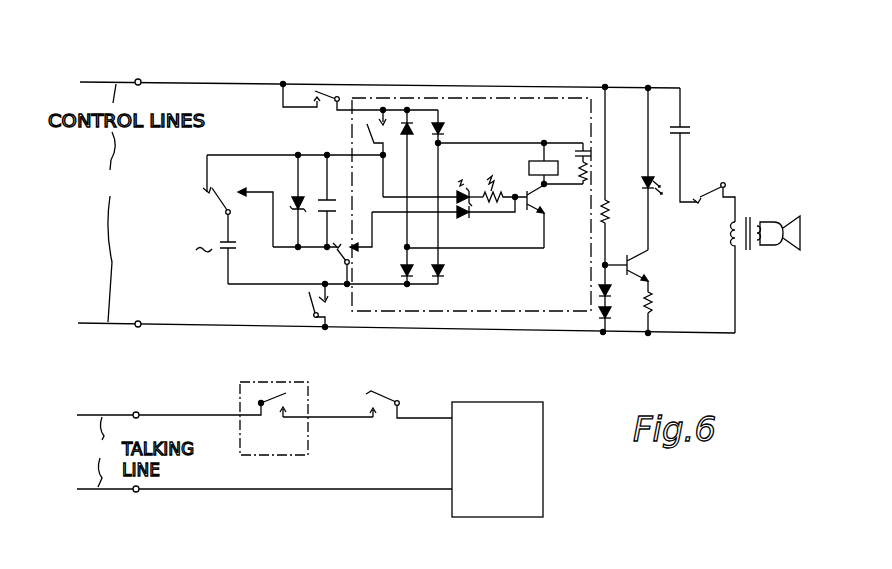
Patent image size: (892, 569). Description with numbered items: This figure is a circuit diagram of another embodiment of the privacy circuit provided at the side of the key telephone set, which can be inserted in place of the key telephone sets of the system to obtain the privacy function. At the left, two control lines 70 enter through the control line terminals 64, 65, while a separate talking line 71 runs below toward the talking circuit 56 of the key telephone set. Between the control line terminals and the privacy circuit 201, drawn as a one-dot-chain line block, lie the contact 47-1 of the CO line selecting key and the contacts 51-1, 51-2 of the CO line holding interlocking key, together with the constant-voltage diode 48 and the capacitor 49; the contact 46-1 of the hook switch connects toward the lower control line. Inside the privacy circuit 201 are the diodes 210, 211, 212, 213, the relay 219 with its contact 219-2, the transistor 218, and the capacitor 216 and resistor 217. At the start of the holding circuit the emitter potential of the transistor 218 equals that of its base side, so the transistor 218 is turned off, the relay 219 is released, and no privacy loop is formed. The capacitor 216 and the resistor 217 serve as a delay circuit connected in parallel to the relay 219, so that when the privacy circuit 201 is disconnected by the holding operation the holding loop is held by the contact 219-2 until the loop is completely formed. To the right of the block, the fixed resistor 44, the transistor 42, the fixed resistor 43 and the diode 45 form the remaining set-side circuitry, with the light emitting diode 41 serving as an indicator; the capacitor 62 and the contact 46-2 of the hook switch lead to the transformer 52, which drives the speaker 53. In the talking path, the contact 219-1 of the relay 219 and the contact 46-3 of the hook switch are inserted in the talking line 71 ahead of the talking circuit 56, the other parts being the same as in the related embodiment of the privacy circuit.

The control line terminal 64 is at (136, 79).
The control line terminal 65 is at (138, 321).
The control lines 70 is at (109, 203).
The contact of CO line selecting key 47-1 is at (334, 114).
The contact of relay 219-2 is at (365, 141).
The contact of CO line holding interlocking key 51-2 is at (231, 188).
The constant-voltage diode 48 is at (292, 197).
The capacitor 49 is at (333, 199).
The contact of CO line holding interlocking key 51-1 is at (346, 250).
The contact of hook switch 46-1 is at (308, 304).
The privacy circuit 201 is at (487, 96).
The diode 210 is at (412, 147).
The diode 211 is at (445, 130).
The diode 212 is at (401, 271).
The diode 213 is at (441, 272).
The relay 219 is at (528, 167).
The capacitor 216 is at (583, 145).
The resistor 217 is at (586, 186).
The transistor 218 is at (549, 210).
The light emitting diode 41 is at (637, 178).
The fixed resistor 44 is at (608, 222).
The transistor 42 is at (652, 264).
The fixed resistor 43 is at (654, 299).
The diode 45 is at (608, 309).
The capacitor 62 is at (693, 133).
The contact of hook switch 46-2 is at (712, 192).
The transformer 52 is at (752, 261).
The speaker 53 is at (792, 251).
The talking line 71 is at (115, 452).
The contact of relay 219-1 is at (271, 416).
The contact of hook switch 46-3 is at (388, 393).
The talking circuit 56 is at (545, 426).